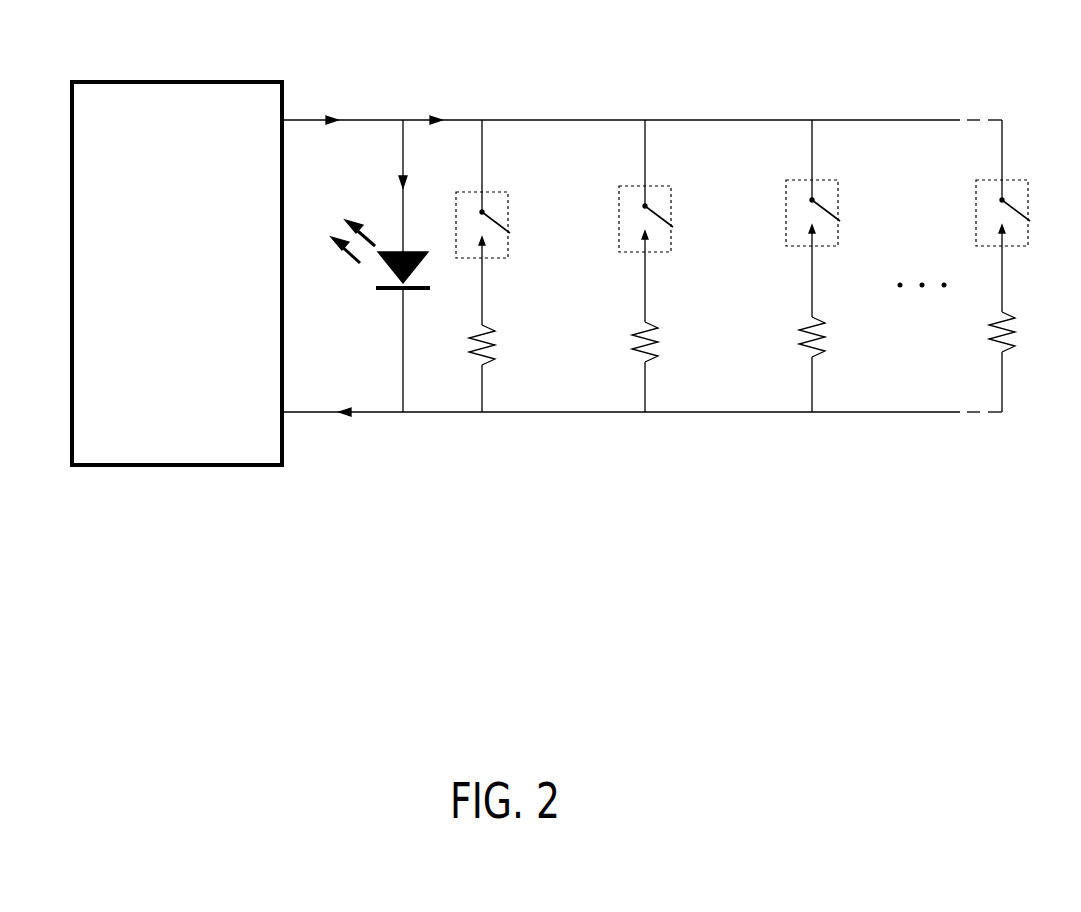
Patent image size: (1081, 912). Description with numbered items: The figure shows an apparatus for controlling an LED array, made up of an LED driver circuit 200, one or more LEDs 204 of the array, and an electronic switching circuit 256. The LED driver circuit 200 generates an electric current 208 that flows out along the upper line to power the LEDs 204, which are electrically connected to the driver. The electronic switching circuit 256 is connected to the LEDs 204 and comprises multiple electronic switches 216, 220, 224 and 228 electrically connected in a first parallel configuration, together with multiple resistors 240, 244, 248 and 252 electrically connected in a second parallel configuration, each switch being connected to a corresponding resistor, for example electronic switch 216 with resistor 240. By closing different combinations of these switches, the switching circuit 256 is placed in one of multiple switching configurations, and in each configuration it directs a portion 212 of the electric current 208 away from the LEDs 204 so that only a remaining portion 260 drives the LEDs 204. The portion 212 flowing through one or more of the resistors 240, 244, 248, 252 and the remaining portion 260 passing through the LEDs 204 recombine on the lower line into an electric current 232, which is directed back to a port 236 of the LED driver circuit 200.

The LED driver circuit 200 is at (208, 278).
The LEDs 204 is at (381, 291).
The electric current 208 is at (345, 118).
The portion of the electric current 212 is at (441, 118).
The electronic switch 216 is at (521, 200).
The electronic switch 220 is at (685, 200).
The electronic switch 224 is at (850, 198).
The electronic switch 228 is at (1037, 198).
The electric current 232 is at (340, 416).
The port 236 is at (282, 412).
The resistor 240 is at (490, 350).
The resistor 244 is at (653, 356).
The resistor 248 is at (820, 353).
The resistor 252 is at (1010, 348).
The electronic switching circuit 256 is at (798, 78).
The remaining portion of the electric current 260 is at (405, 192).